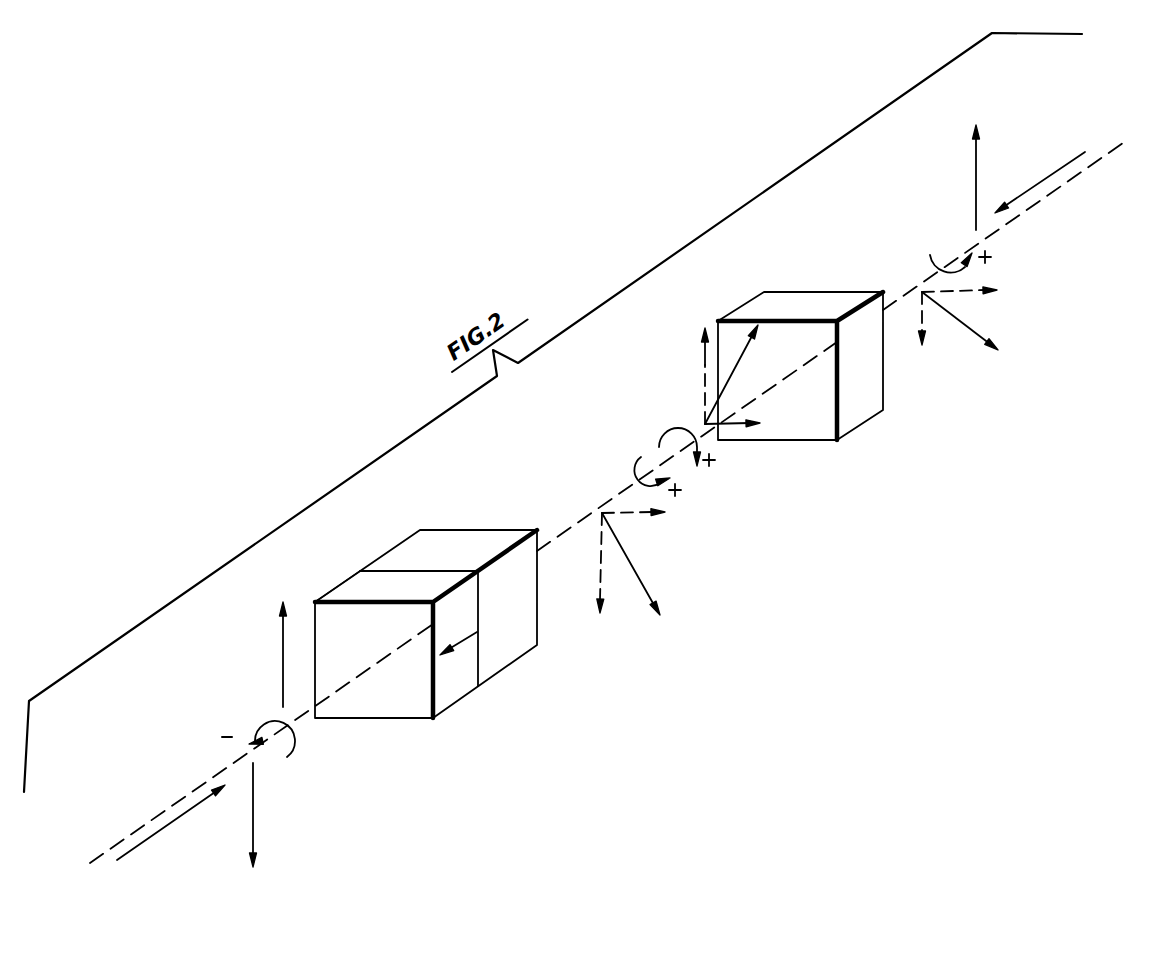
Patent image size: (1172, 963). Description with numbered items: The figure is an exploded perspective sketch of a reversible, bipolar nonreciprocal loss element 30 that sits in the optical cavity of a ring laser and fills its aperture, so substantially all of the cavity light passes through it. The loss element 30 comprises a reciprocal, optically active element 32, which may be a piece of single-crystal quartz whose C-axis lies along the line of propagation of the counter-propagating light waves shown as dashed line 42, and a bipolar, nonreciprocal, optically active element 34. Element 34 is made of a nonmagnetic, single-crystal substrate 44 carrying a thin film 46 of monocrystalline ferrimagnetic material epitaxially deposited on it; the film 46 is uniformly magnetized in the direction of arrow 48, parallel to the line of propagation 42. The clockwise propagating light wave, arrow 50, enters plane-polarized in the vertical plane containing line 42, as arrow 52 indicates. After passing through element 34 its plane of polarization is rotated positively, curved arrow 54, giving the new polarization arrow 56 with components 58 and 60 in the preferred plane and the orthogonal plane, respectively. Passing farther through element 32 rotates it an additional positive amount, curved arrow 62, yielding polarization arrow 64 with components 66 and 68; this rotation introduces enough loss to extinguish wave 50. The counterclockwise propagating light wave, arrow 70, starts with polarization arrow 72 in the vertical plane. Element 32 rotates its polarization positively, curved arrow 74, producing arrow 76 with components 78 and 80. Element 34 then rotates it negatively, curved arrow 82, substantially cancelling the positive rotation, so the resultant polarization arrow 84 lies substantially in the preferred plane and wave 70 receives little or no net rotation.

The bipolar nonreciprocal loss element 30 is at (543, 389).
The reciprocal optically active element 32 is at (855, 398).
The bipolar nonreciprocal optically active element 34 is at (482, 519).
The line of propagation 42 is at (1057, 190).
The substrate 44 is at (510, 628).
The thin film 46 is at (355, 585).
The magnetization direction arrow 48 is at (470, 638).
The clockwise propagating light wave 50 is at (160, 830).
The initial polarization arrow 52 is at (255, 800).
The positive rotation curved arrow 54 is at (632, 473).
The rotated polarization arrow 56 is at (632, 563).
The preferred-plane component 58 is at (600, 553).
The orthogonal-plane component 60 is at (632, 517).
The additional positive rotation curved arrow 62 is at (935, 258).
The final polarization arrow 64 is at (972, 327).
The preferred-plane component 66 is at (925, 310).
The orthogonal-plane component 68 is at (973, 303).
The counterclockwise propagating light wave 70 is at (1047, 175).
The initial polarization arrow 72 is at (972, 174).
The positive rotation curved arrow 74 is at (678, 430).
The rotated polarization arrow 76 is at (732, 370).
The preferred-plane component 78 is at (705, 376).
The orthogonal-plane component 80 is at (733, 428).
The negative rotation curved arrow 82 is at (285, 736).
The resultant polarization arrow 84 is at (280, 652).